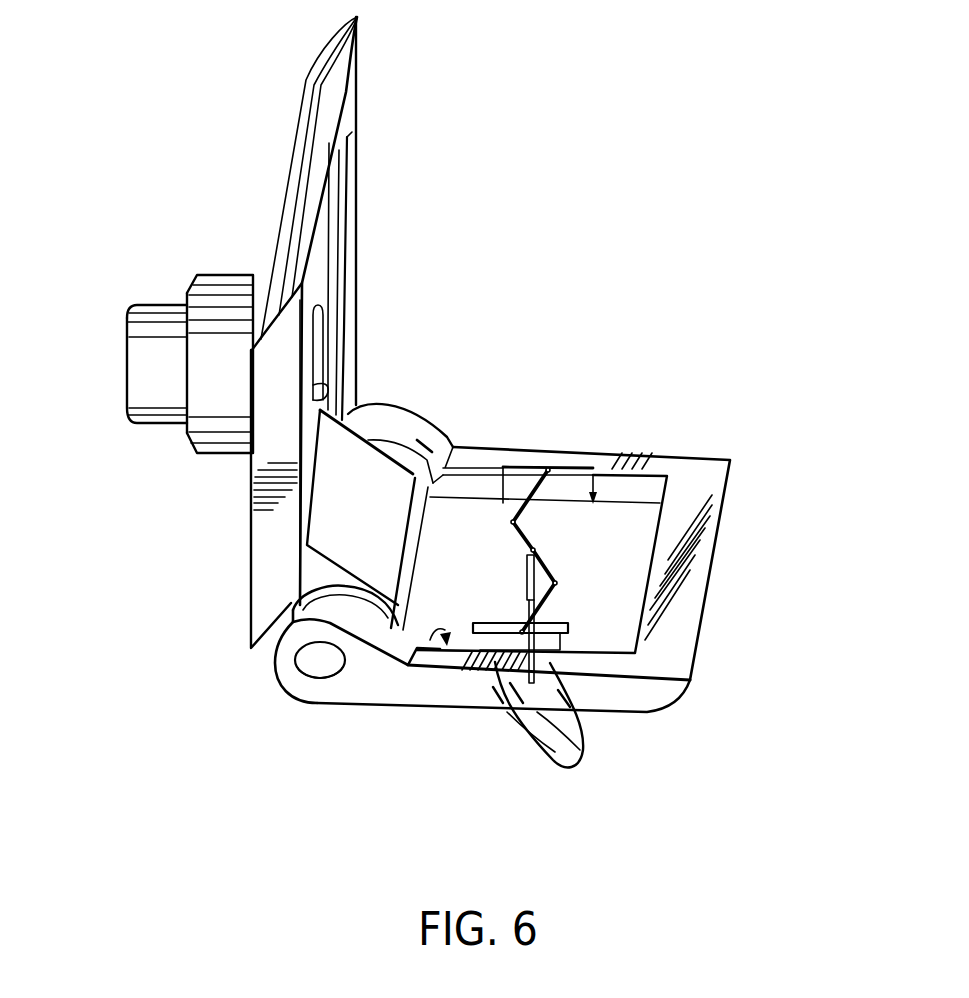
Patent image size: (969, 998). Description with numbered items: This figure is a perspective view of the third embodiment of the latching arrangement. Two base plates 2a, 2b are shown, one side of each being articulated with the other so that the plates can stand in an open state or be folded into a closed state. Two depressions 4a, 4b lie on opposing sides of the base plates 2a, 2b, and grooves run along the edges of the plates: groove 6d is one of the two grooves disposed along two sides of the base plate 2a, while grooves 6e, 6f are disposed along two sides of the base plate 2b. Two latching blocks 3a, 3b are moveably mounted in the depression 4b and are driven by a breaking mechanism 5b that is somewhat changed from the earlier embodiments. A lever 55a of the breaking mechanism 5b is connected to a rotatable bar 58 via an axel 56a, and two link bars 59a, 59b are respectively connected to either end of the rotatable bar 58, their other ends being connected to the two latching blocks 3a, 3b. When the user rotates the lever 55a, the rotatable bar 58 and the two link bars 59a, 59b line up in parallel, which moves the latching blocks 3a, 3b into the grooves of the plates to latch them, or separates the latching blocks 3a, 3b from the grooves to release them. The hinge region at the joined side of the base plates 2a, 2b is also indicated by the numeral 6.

The base plate 2a is at (346, 90).
The base plate 2b is at (697, 470).
The latching block 3a is at (577, 480).
The latching block 3b is at (466, 660).
The depression 4a is at (330, 291).
The depression 4b is at (463, 508).
The breaking mechanism 5b is at (520, 720).
The hinge unit 6 is at (540, 640).
The groove 6d is at (326, 372).
The groove 6e is at (328, 240).
The groove 6f is at (413, 668).
The lever 55a is at (565, 758).
The axel 56a is at (583, 743).
The rotatable bar 58 is at (575, 550).
The link bar 59a is at (530, 505).
The link bar 59b is at (575, 615).